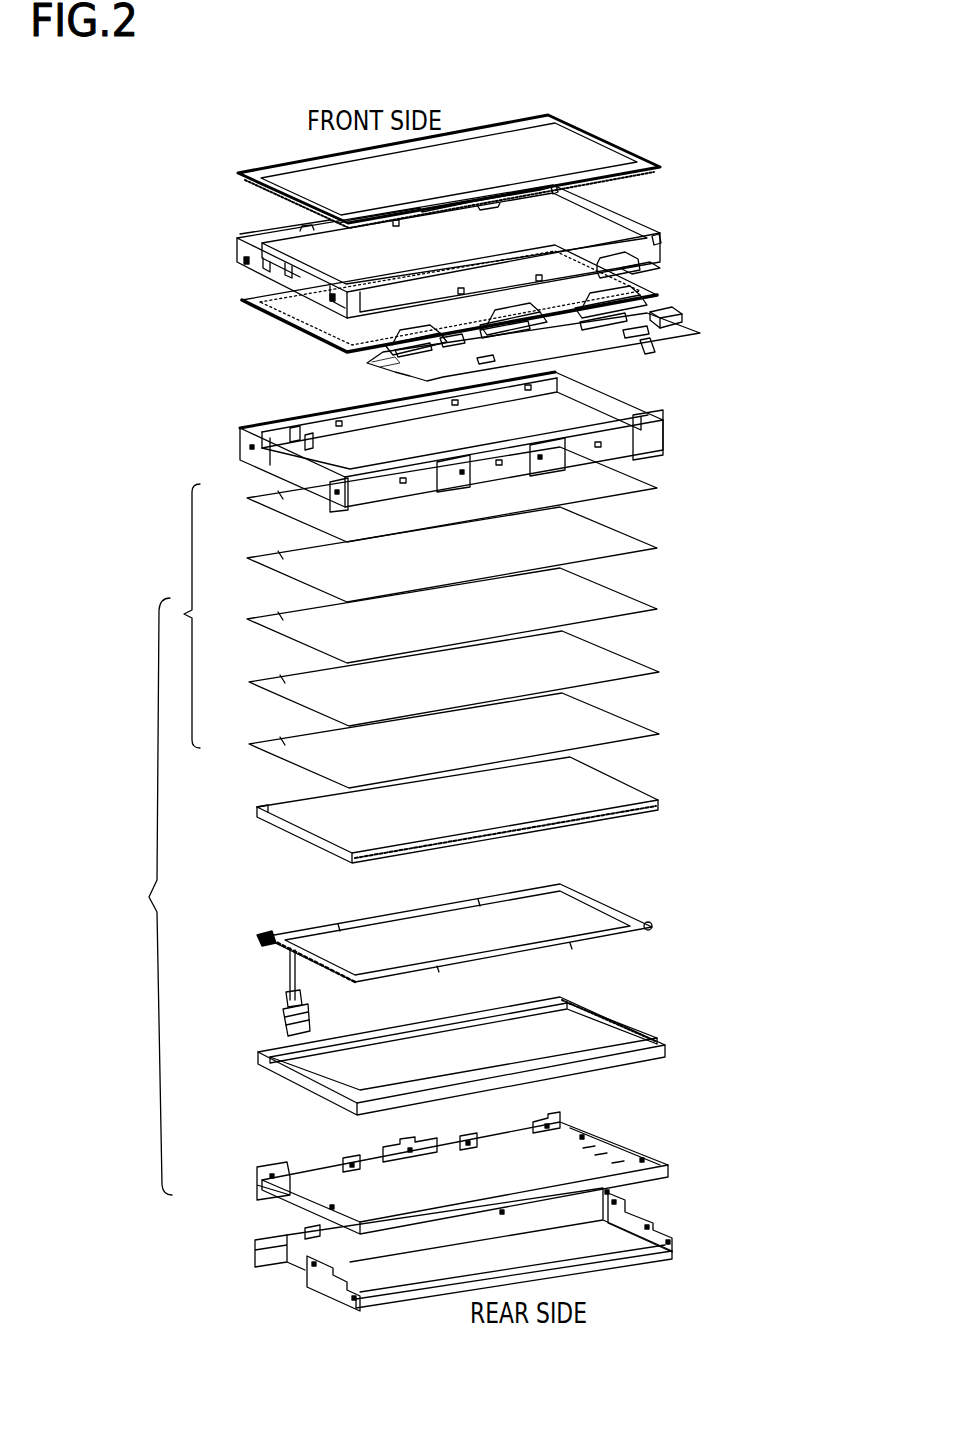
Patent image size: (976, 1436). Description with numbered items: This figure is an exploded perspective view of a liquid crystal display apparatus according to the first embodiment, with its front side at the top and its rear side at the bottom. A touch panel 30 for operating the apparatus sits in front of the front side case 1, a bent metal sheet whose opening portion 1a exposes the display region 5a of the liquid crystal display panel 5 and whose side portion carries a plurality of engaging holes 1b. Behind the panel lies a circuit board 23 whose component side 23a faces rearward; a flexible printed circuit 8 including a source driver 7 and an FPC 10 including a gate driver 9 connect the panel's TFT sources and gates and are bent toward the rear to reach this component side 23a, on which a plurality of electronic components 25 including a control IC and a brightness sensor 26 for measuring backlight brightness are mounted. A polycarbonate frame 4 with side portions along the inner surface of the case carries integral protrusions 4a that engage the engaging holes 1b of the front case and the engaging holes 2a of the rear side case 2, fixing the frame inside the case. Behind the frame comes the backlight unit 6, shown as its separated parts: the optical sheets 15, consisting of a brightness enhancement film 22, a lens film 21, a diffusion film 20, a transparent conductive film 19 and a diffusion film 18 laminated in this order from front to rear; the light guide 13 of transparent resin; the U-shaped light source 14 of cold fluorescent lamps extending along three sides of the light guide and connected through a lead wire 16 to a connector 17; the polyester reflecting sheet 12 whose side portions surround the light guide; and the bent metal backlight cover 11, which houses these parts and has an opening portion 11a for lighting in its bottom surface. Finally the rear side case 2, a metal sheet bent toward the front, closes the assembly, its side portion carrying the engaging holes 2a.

The touch panel 30 is at (275, 178).
The front side case 1 is at (237, 249).
The opening portion 1a is at (265, 233).
The engaging holes 1b is at (395, 227).
The gate driver 9 is at (645, 270).
The FPC 10 is at (640, 286).
The liquid crystal display panel 5 is at (283, 322).
The display region 5a is at (300, 333).
The circuit board 23 is at (620, 350).
The component side 23a is at (640, 360).
The source driver 7 is at (408, 340).
The flexible printed circuit 8 is at (438, 347).
The electronic components 25 is at (496, 358).
The brightness sensor 26 is at (682, 314).
The frame 4 is at (240, 437).
The protrusions 4a is at (252, 446).
The brightness enhancement film 22 is at (285, 490).
The lens film 21 is at (285, 551).
The diffusion film 20 is at (285, 613).
The transparent conductive film 19 is at (287, 675).
The diffusion film 18 is at (287, 737).
The optical sheets 15 is at (177, 616).
The light guide 13 is at (275, 824).
The backlight unit 6 is at (153, 896).
The light source 14 is at (313, 927).
The lead wire 16 is at (270, 945).
The connector 17 is at (285, 1025).
The reflecting sheet 12 is at (262, 1054).
The backlight cover 11 is at (257, 1182).
The opening portion 11a is at (605, 1150).
The rear side case 2 is at (257, 1252).
The engaging holes 2a is at (305, 1232).